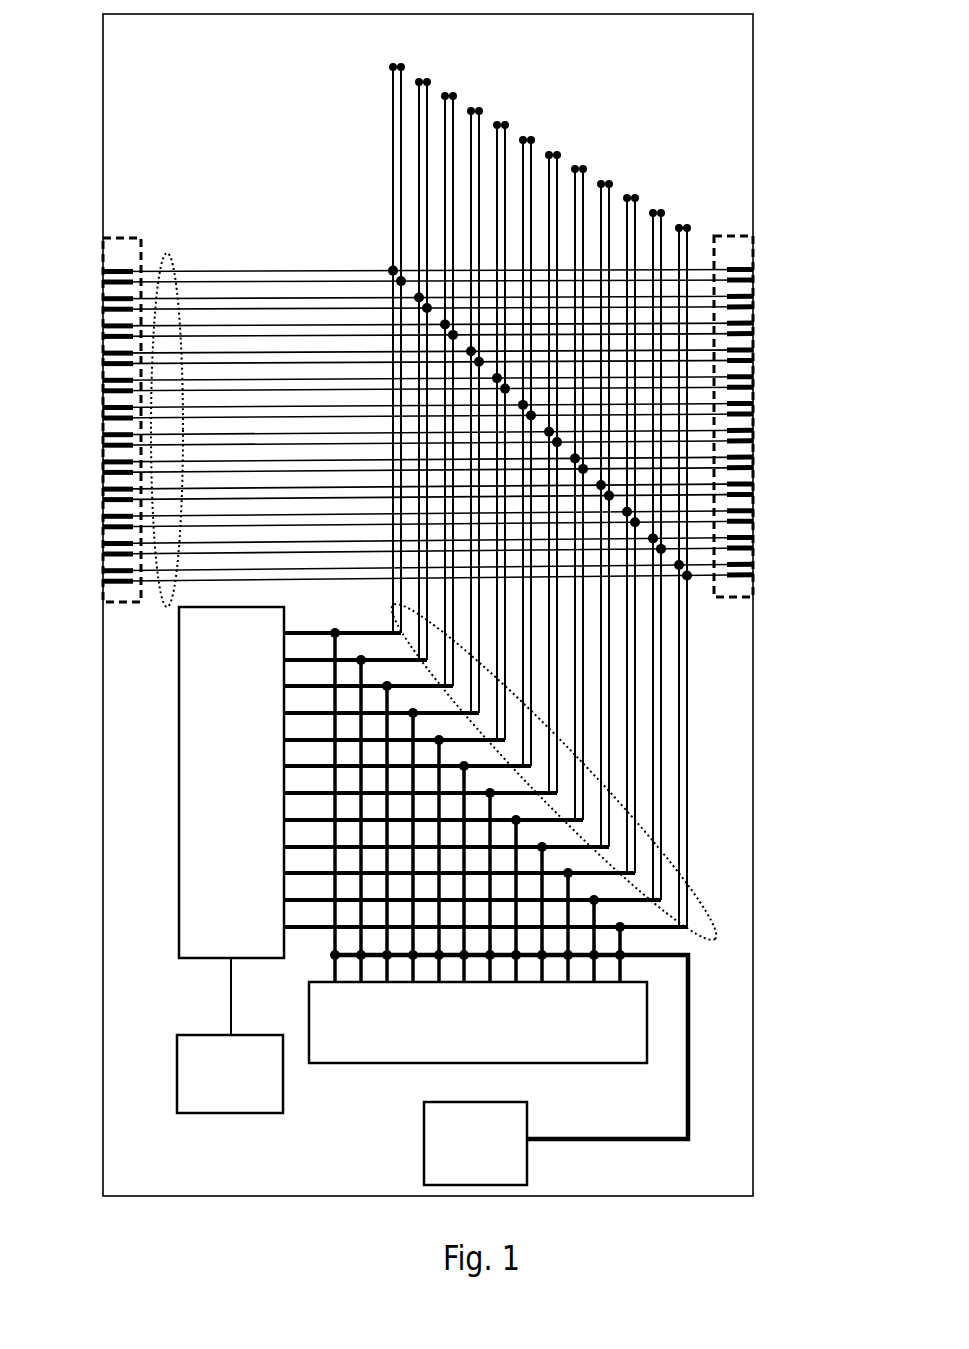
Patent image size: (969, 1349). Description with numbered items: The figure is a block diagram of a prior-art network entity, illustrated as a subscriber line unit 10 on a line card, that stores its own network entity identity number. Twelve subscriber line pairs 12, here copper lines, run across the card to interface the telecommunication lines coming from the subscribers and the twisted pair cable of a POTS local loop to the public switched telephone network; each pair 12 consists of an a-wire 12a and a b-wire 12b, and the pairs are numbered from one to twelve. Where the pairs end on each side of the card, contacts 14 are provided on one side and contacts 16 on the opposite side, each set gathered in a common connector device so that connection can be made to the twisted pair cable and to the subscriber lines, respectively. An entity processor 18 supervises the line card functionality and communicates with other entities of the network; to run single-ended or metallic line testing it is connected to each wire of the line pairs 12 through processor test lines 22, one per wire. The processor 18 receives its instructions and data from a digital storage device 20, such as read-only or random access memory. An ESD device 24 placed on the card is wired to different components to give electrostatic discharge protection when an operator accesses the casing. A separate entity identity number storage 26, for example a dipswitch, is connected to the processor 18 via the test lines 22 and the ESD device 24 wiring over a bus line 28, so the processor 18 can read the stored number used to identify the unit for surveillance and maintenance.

The subscriber line unit 10 is at (162, 62).
The subscriber line pair 12 is at (163, 258).
The a-wire 12a is at (220, 272).
The b-wire 12b is at (230, 282).
The contacts 14 is at (755, 278).
The contacts 16 is at (108, 283).
The entity processor 18 is at (218, 764).
The digital storage device 20 is at (216, 1087).
The processor test lines 22 is at (715, 933).
The ESD device 24 is at (464, 1034).
The EIN storage 26 is at (462, 1149).
The bus line 28 is at (690, 1085).